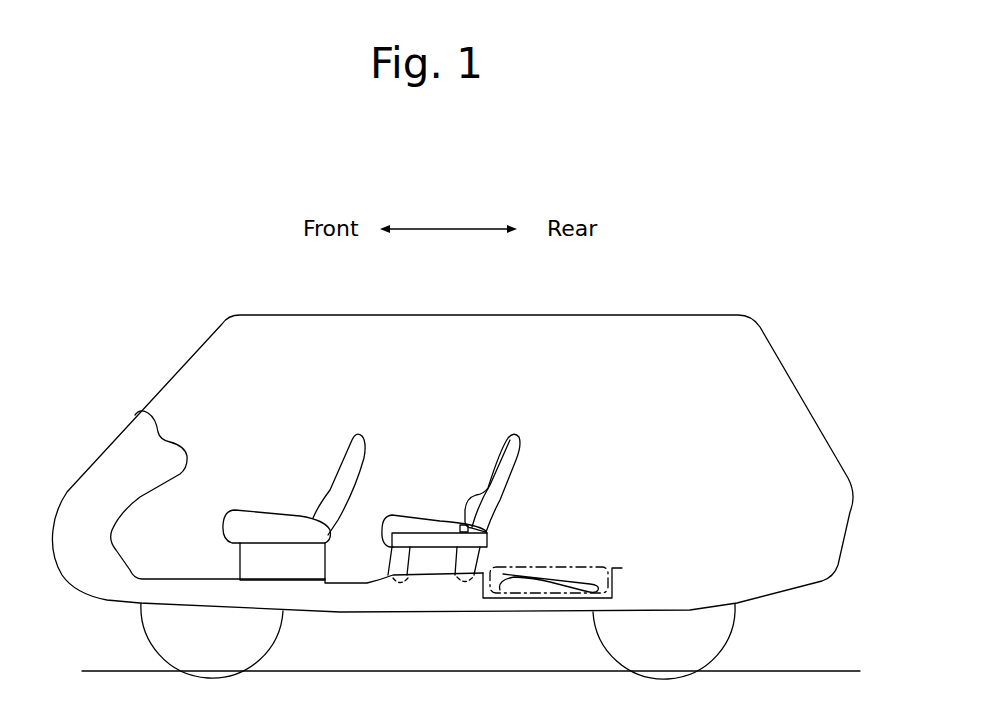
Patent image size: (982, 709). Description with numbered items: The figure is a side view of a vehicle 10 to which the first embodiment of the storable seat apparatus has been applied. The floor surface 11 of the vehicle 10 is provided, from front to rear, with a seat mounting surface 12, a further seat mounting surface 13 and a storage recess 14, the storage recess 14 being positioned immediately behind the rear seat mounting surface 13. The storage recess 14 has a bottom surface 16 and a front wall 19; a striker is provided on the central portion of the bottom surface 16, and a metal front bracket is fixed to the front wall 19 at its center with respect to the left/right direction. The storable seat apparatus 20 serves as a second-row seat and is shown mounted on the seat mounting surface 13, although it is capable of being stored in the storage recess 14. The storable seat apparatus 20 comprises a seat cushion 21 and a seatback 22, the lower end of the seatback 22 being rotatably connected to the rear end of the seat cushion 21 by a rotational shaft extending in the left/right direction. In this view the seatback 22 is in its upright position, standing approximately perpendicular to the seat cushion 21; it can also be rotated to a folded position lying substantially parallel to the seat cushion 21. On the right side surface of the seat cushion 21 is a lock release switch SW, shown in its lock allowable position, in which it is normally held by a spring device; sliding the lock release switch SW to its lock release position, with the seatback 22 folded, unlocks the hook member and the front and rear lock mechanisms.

The vehicle 10 is at (108, 345).
The floor surface 11 is at (212, 580).
The seat mounting surface 12 is at (287, 580).
The seat mounting surface 13 is at (437, 575).
The storage recess 14 is at (613, 570).
The bottom surface 16 is at (560, 590).
The front wall 19 is at (497, 590).
The storable seat apparatus 20 is at (542, 405).
The seat cushion 21 is at (413, 517).
The seatback 22 is at (513, 450).
The lock release switch SW is at (470, 497).